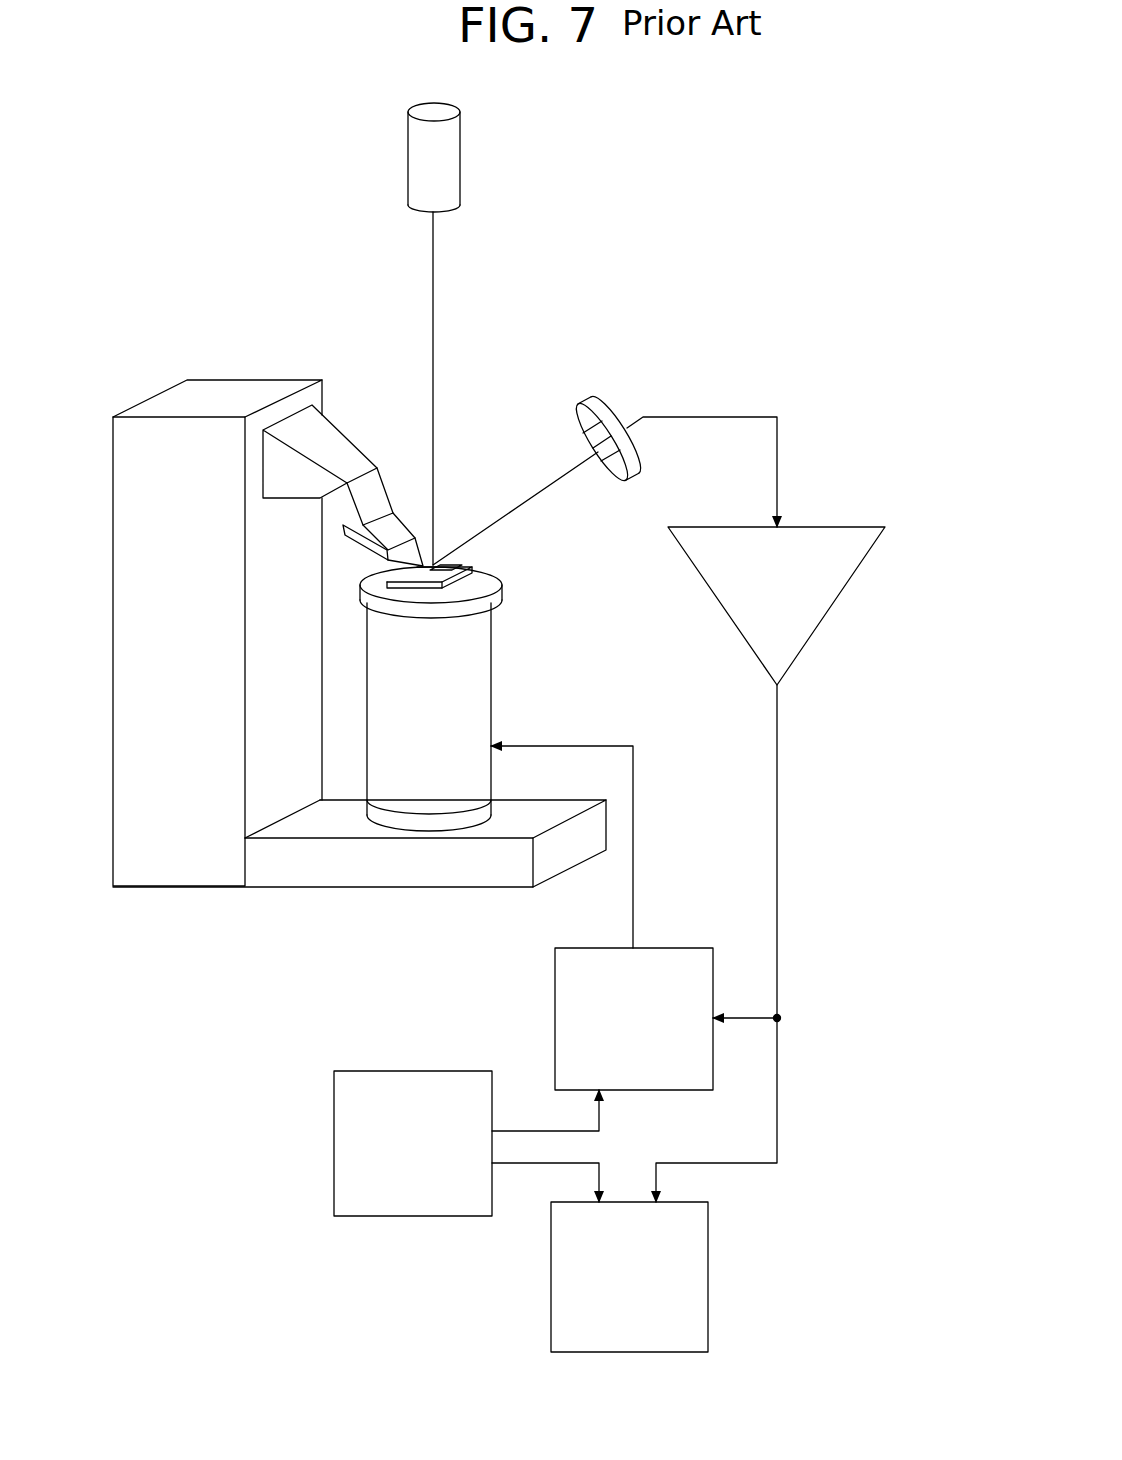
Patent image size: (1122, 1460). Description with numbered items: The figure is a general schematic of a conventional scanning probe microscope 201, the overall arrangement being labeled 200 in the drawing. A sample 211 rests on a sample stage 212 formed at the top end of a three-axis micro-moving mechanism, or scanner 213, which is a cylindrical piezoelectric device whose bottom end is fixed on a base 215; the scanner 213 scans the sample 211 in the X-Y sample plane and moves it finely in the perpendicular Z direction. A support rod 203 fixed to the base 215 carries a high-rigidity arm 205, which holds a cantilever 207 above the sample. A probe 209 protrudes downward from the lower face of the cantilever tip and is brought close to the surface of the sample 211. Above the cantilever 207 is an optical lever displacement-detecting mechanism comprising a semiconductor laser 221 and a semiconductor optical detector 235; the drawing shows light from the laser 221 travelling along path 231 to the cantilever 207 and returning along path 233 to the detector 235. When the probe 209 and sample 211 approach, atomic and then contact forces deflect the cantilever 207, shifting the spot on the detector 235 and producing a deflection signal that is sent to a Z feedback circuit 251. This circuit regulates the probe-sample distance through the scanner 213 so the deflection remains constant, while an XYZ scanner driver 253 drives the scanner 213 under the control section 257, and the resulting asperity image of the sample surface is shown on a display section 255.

The scanning probe microscope (prior art) 200 is at (598, 352).
The scanning probe microscope 201 is at (143, 220).
The support rod 203 is at (248, 390).
The arm 205 is at (343, 445).
The cantilever 207 is at (425, 548).
The probe 209 is at (468, 566).
The sample 211 is at (440, 590).
The sample stage 212 is at (488, 598).
The three-axis micro-moving mechanism (scanner) 213 is at (467, 673).
The base 215 is at (383, 873).
The semiconductor laser (LD) 221 is at (447, 153).
The laser beam 231 is at (434, 326).
The reflected laser beam 233 is at (560, 475).
The optical detector 235 is at (607, 472).
The Z feedback circuit 251 is at (817, 630).
The XYZ scanner driver 253 is at (667, 950).
The display section 255 is at (705, 1320).
The control section 257 is at (412, 1080).